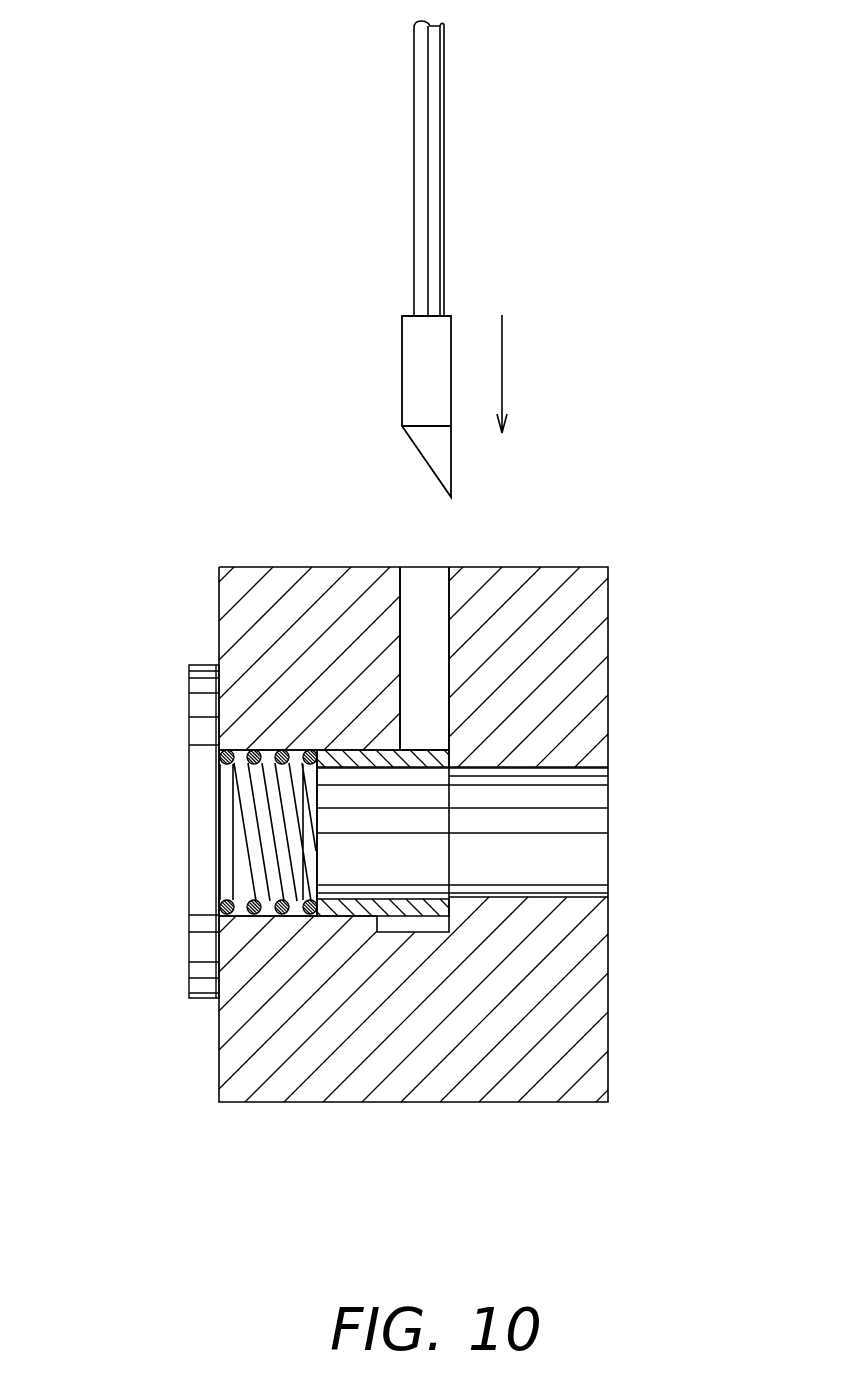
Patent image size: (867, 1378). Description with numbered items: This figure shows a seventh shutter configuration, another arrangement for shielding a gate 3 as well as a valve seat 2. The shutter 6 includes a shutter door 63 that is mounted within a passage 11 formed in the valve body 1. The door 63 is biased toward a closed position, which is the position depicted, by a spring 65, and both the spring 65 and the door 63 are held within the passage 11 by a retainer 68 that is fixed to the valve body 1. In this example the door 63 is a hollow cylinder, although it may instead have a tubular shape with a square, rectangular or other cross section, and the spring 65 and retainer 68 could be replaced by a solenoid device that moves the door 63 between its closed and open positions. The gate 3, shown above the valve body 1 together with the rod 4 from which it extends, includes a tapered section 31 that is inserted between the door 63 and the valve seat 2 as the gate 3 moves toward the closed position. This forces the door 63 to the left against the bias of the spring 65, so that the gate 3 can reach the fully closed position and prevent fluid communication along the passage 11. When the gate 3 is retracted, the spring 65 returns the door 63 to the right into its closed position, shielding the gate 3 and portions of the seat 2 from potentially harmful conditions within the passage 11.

The valve body 1 is at (608, 1073).
The valve seat 2 is at (449, 745).
The gate 3 is at (402, 345).
The tapered section 31 is at (451, 497).
The rod 4 is at (413, 232).
The shutter 6 is at (157, 772).
The passage 11 is at (477, 768).
The shutter door 63 is at (337, 768).
The spring 65 is at (220, 858).
The retainer 68 is at (187, 998).